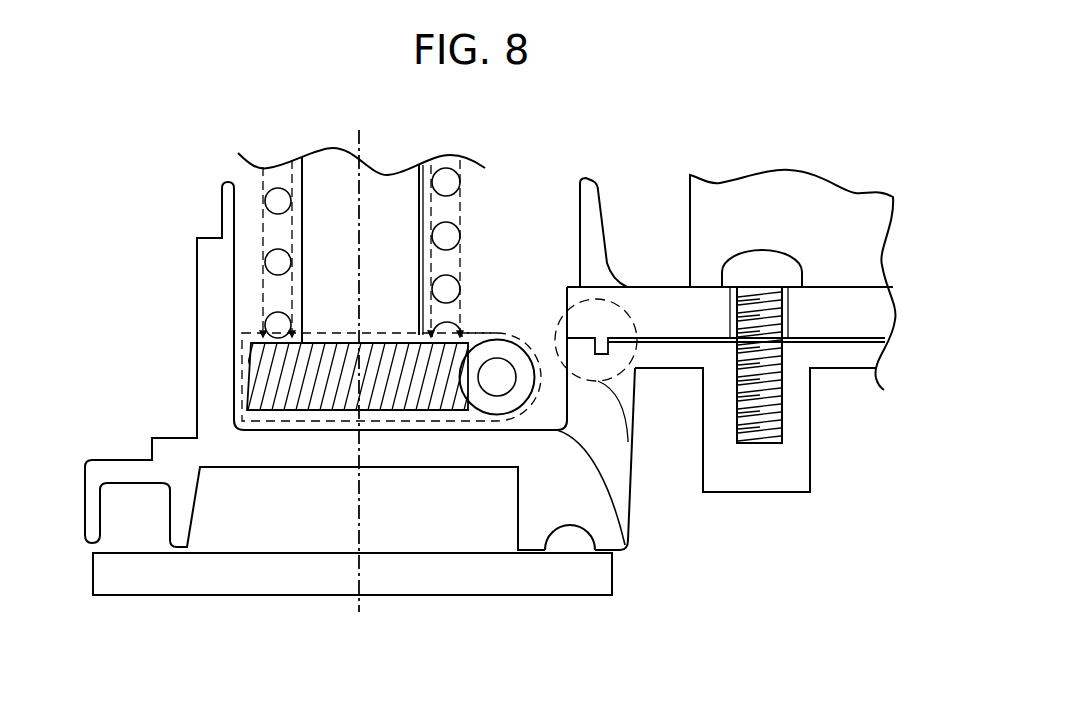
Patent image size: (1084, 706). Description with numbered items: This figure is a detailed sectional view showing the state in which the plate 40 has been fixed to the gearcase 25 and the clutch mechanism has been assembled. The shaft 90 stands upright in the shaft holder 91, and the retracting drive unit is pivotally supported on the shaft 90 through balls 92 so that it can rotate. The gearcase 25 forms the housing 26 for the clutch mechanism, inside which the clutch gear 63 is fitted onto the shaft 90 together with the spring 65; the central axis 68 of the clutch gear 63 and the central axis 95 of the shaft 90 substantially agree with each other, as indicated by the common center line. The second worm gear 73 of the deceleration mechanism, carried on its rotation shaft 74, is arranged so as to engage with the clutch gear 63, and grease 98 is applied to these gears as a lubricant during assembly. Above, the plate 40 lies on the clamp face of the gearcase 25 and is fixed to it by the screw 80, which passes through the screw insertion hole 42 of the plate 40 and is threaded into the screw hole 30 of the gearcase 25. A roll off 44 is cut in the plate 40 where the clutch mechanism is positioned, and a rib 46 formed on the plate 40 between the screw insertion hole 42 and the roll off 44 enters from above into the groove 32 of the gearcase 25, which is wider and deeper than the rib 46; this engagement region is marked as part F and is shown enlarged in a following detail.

The gearcase 25 is at (197, 338).
The housing for the clutch mechanism 26 is at (622, 548).
The screw hole 30 is at (782, 403).
The groove 32 is at (632, 396).
The plate 40 is at (767, 193).
The screw insertion hole 42 is at (788, 310).
The roll off 44 is at (563, 287).
The rib 46 is at (603, 340).
The clutch gear 63 is at (247, 385).
The spring 65 is at (463, 177).
The central axis of the clutch gear 68 is at (358, 137).
The central axis of the shaft 95 is at (358, 137).
The second worm gear 73 is at (482, 327).
The rotation shaft 74 is at (498, 415).
The screw 80 is at (800, 255).
The shaft 90 is at (263, 178).
The shaft holder 91 is at (237, 596).
The ball 92 is at (567, 543).
The grease 98 is at (512, 330).
The part F is at (628, 440).